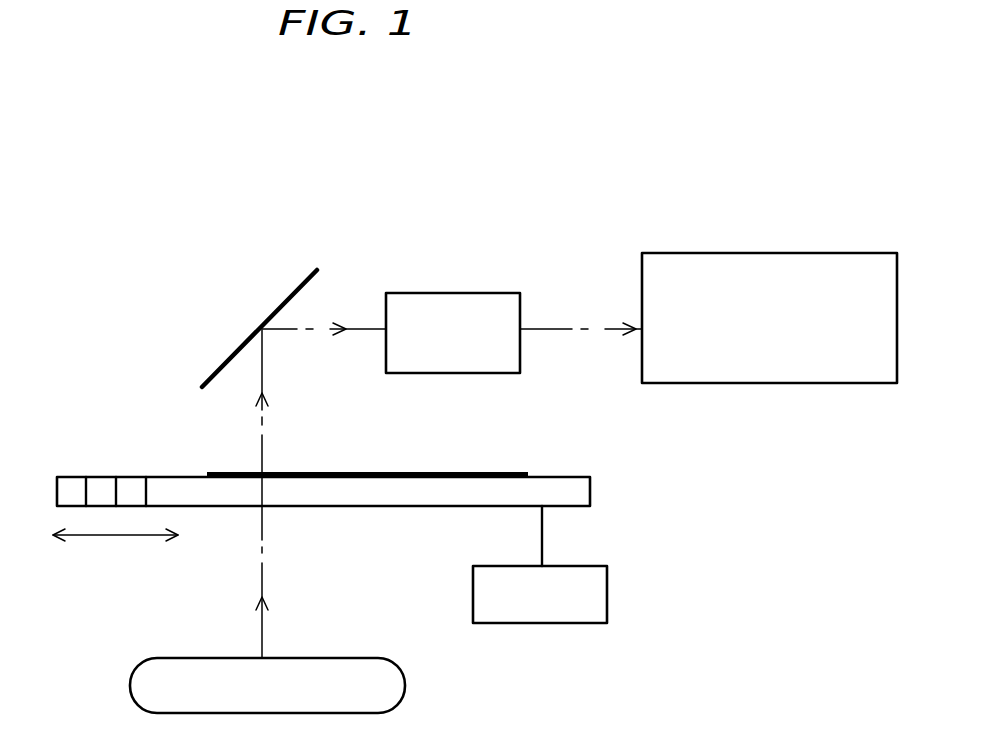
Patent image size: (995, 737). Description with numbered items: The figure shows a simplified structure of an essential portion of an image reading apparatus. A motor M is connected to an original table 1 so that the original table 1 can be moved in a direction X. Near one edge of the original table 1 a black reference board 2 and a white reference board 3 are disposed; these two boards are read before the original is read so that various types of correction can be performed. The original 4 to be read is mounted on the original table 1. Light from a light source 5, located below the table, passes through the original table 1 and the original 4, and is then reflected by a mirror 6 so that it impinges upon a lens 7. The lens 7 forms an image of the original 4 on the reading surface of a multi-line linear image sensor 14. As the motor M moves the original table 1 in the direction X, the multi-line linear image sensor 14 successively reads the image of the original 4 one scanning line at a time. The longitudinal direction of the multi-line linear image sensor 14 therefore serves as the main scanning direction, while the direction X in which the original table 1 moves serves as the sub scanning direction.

The original table 1 is at (590, 490).
The black reference board 2 is at (100, 475).
The white reference board 3 is at (131, 490).
The original 4 is at (460, 473).
The light source 5 is at (337, 658).
The mirror 6 is at (305, 278).
The lens 7 is at (435, 293).
The multi-line linear image sensor 14 is at (683, 253).
The motor M is at (580, 618).
The direction X is at (130, 535).